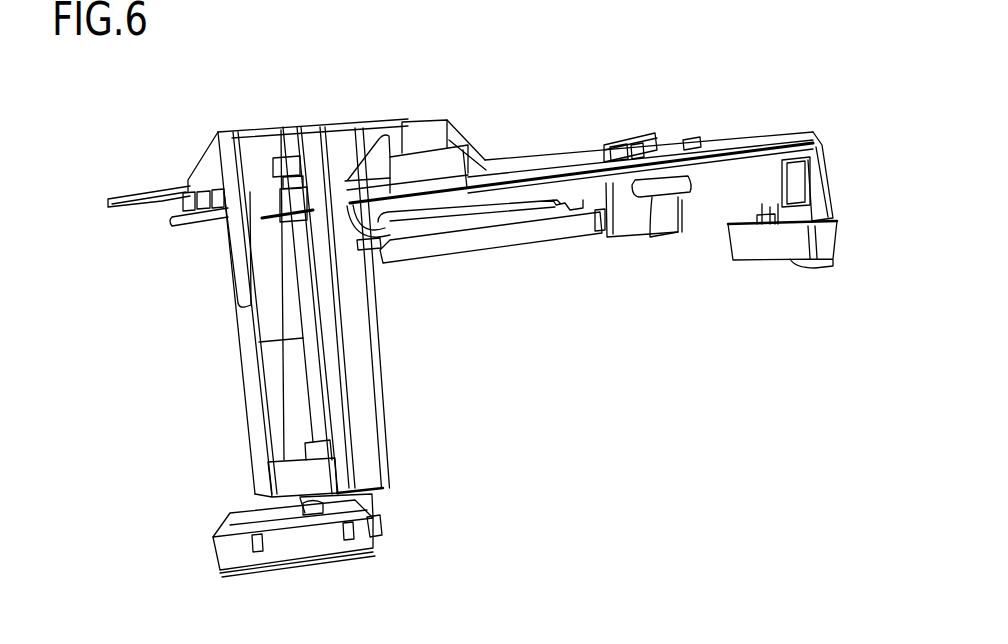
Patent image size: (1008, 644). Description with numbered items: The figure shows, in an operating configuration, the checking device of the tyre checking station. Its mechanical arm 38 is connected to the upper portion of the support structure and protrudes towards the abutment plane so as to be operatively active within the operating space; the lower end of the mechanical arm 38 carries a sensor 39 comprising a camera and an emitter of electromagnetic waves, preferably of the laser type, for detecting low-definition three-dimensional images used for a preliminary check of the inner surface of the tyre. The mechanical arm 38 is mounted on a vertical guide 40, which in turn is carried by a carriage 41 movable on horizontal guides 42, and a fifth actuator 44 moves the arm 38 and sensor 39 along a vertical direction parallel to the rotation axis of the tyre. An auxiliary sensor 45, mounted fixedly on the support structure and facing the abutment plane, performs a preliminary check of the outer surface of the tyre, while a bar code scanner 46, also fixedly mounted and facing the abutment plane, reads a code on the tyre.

The mechanical arm 38 is at (414, 383).
The sensor 39 is at (290, 543).
The vertical guide 40 is at (385, 438).
The carriage 41 is at (427, 135).
The horizontal guides 42 is at (723, 146).
The fifth actuator 44 is at (285, 388).
The auxiliary sensor 45 is at (760, 262).
The bar code scanner 46 is at (653, 200).